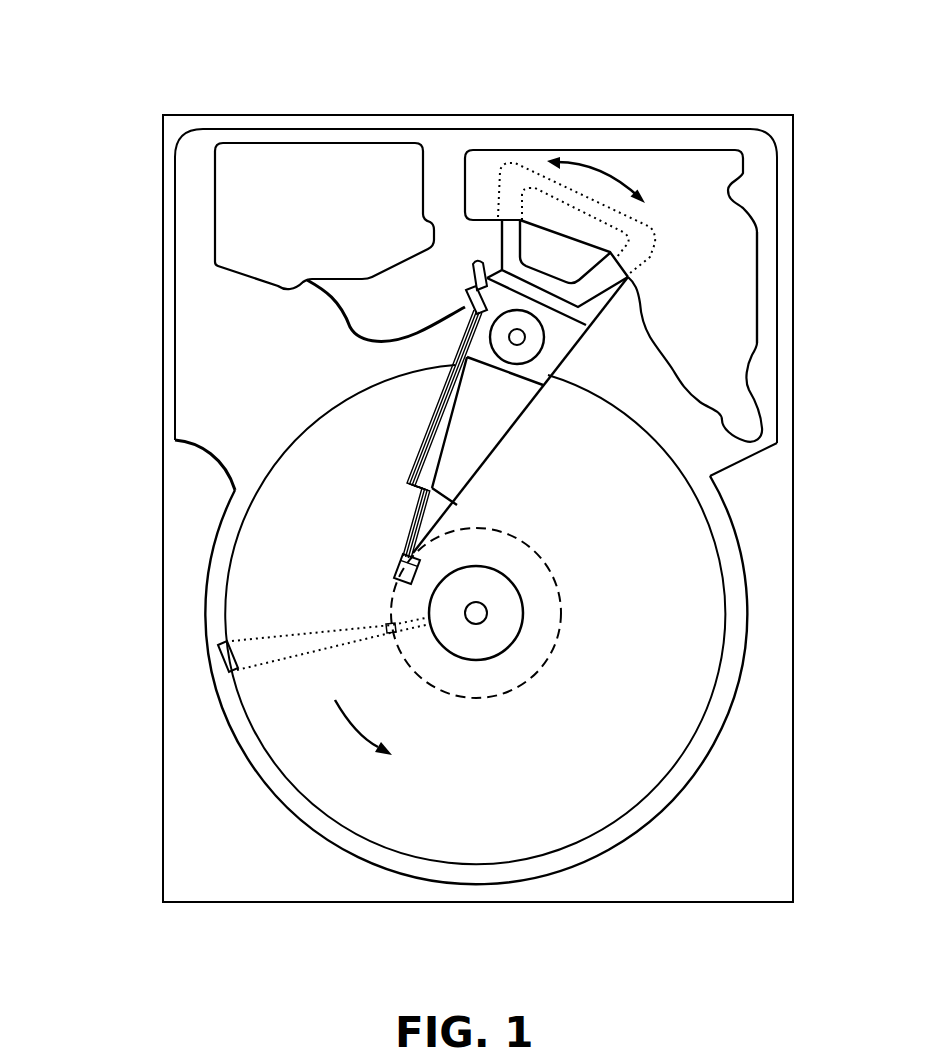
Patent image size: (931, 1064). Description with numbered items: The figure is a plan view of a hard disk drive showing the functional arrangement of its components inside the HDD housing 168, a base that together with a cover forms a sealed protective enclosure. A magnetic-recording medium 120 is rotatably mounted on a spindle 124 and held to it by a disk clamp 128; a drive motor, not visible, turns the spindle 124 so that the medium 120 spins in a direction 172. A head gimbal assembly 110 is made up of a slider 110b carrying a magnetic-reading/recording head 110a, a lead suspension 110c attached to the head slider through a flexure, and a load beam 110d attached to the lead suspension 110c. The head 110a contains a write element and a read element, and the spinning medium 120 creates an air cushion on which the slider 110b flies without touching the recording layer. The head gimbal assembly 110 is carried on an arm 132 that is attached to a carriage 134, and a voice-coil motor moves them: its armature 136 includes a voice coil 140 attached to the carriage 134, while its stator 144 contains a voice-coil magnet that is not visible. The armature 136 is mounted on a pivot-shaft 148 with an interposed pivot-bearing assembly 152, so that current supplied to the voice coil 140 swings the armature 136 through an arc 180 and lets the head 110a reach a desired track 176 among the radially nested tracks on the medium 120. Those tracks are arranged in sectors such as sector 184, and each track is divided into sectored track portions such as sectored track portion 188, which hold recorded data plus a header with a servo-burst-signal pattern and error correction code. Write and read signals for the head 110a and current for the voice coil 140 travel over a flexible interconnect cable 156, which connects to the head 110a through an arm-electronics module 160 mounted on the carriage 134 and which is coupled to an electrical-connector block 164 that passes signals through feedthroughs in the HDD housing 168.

The head gimbal assembly 110 is at (256, 447).
The magnetic-reading/recording head 110a is at (395, 580).
The slider 110b is at (403, 553).
The lead suspension 110c is at (430, 506).
The load beam 110d is at (408, 483).
The magnetic-recording medium 120 is at (660, 563).
The spindle 124 is at (482, 612).
The disk clamp 128 is at (502, 627).
The arm 132 is at (470, 450).
The carriage 134 is at (535, 368).
The armature 136 is at (497, 255).
The voice coil 140 is at (513, 232).
The stator 144 is at (725, 240).
The pivot-shaft 148 is at (526, 337).
The pivot-bearing assembly 152 is at (530, 348).
The flexible interconnect cable 156 is at (333, 315).
The arm-electronics module 160 is at (463, 300).
The electrical-connector block 164 is at (240, 215).
The HDD housing 168 is at (775, 128).
The direction 172 is at (365, 733).
The track 176 is at (550, 573).
The arc 180 is at (597, 167).
The sector 184 is at (217, 657).
The sectored track portion 188 is at (383, 628).